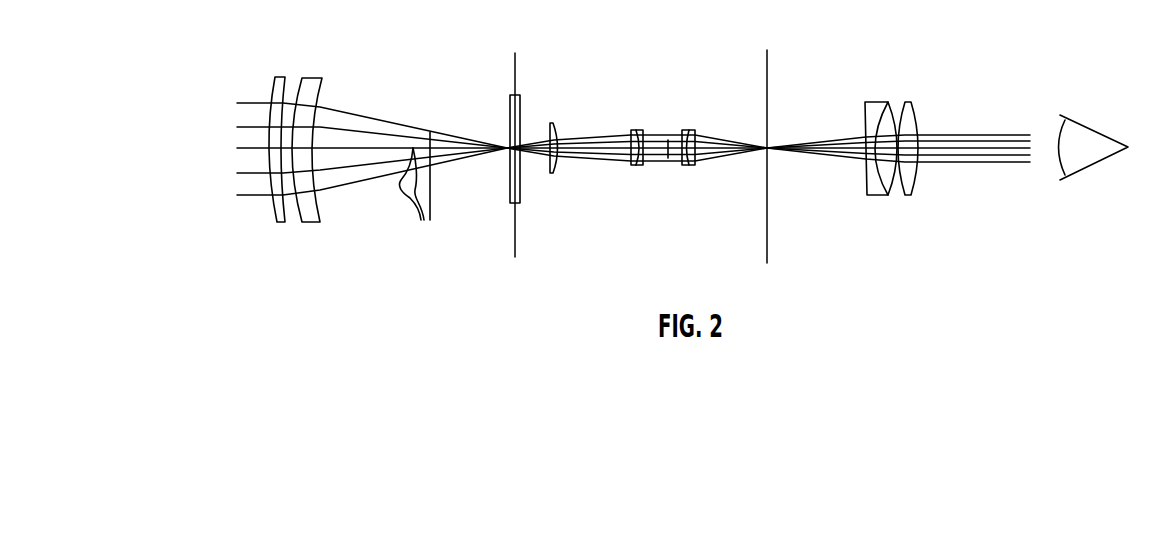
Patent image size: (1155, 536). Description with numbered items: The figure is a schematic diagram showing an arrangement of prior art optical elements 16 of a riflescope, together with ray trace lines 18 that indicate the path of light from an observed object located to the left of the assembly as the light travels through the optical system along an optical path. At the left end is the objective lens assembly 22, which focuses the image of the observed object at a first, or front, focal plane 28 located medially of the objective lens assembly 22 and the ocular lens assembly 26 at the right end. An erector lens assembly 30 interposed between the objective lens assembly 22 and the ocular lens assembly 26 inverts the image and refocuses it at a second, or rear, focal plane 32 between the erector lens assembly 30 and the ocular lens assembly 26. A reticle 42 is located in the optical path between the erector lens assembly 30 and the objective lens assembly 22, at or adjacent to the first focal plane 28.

The optical elements 16 is at (972, 73).
The ray trace lines 18 is at (419, 190).
The objective lens assembly 22 is at (267, 223).
The ocular lens assembly 26 is at (918, 212).
The first focal plane 28 is at (515, 77).
The erector lens assembly 30 is at (545, 183).
The second focal plane 32 is at (767, 72).
The reticle 42 is at (512, 188).